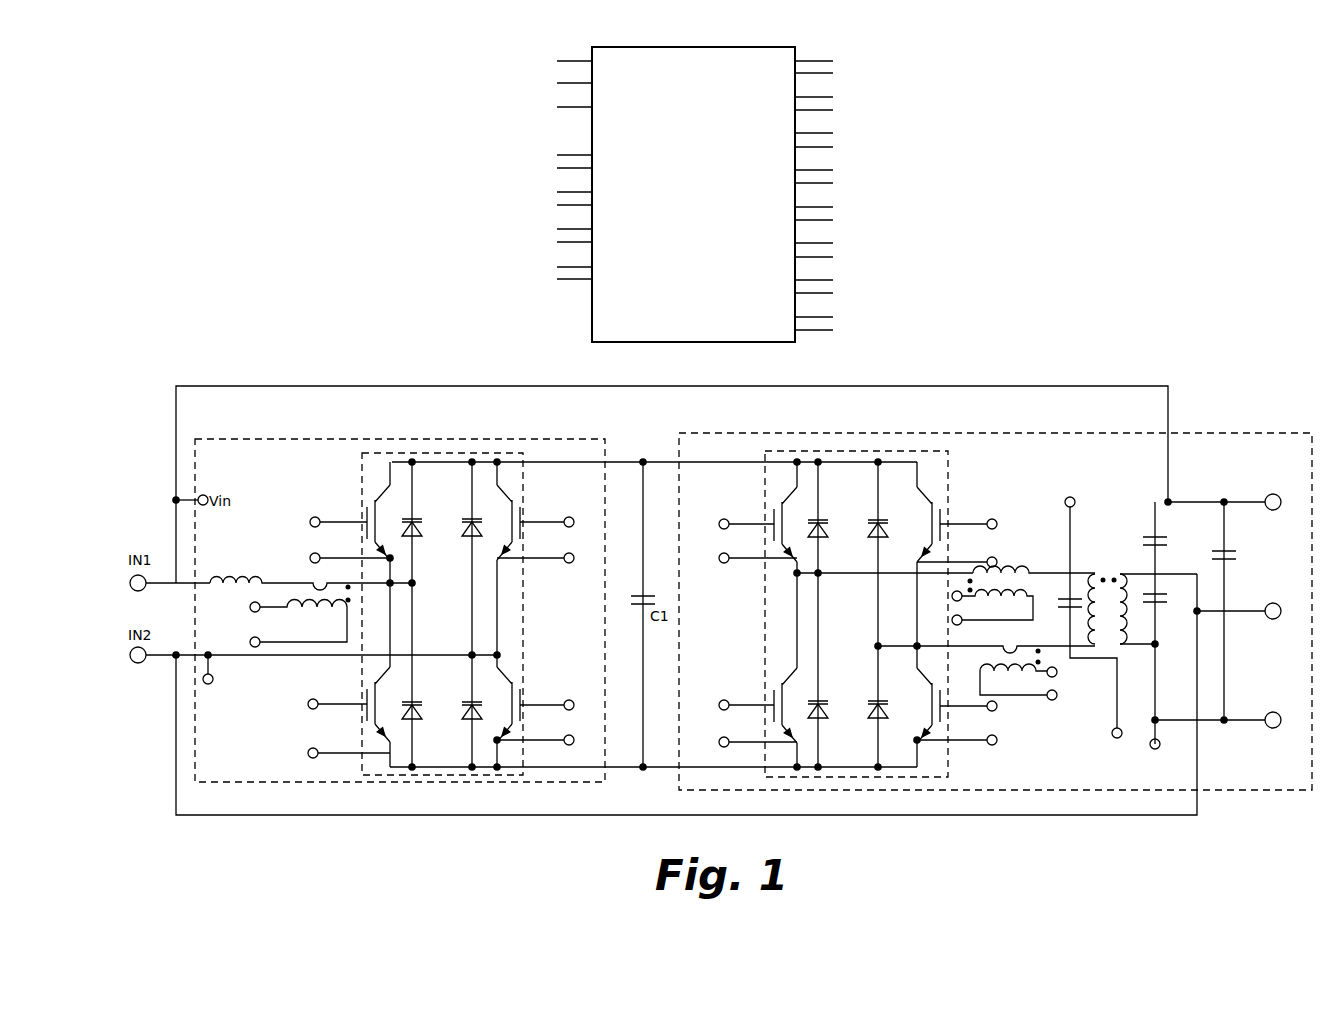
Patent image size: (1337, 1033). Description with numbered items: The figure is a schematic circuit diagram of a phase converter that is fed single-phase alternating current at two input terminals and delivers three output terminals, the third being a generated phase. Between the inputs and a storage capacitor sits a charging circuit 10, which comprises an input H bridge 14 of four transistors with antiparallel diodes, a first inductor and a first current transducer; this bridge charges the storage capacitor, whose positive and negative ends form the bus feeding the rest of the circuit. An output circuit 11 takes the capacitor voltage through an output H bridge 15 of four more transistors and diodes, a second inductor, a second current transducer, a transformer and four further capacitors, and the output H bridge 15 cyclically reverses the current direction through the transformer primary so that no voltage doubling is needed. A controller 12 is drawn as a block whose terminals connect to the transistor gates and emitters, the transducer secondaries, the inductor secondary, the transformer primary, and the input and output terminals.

The charging circuit 10 is at (358, 439).
The output circuit 11 is at (748, 433).
The controller 12 is at (592, 317).
The input H bridge 14 is at (362, 466).
The output H bridge 15 is at (948, 472).